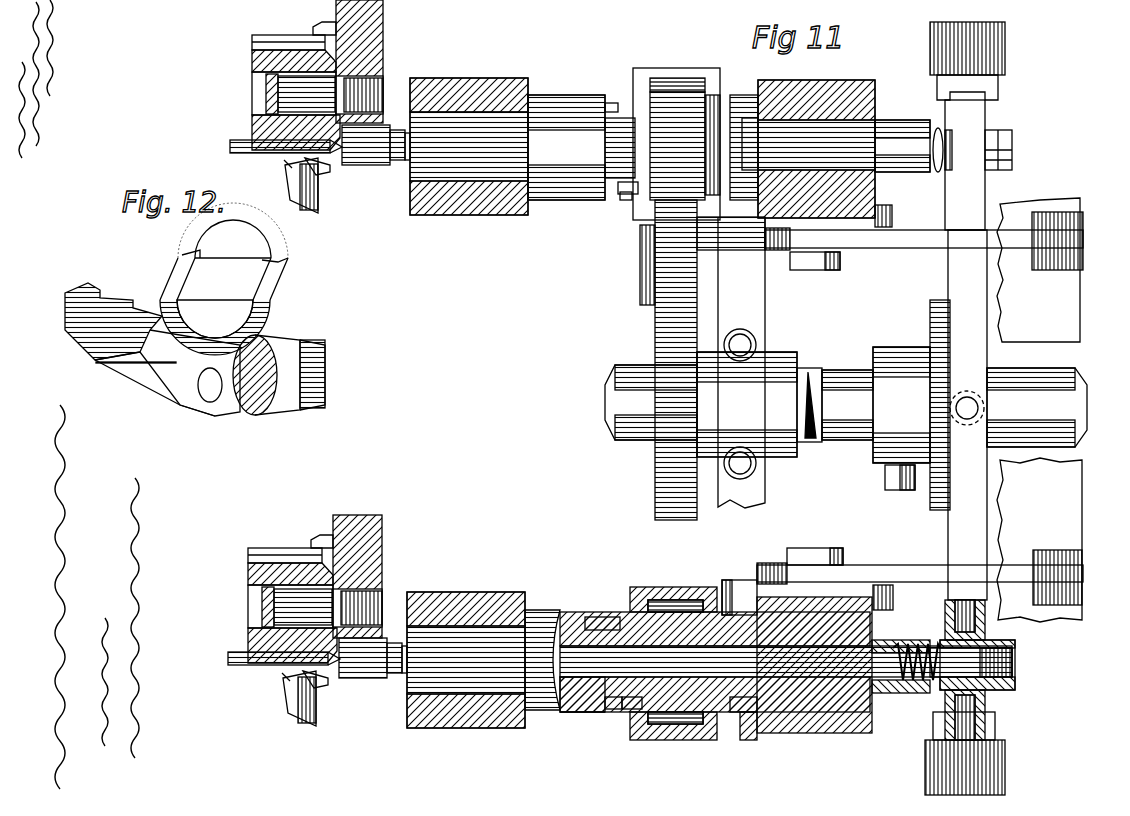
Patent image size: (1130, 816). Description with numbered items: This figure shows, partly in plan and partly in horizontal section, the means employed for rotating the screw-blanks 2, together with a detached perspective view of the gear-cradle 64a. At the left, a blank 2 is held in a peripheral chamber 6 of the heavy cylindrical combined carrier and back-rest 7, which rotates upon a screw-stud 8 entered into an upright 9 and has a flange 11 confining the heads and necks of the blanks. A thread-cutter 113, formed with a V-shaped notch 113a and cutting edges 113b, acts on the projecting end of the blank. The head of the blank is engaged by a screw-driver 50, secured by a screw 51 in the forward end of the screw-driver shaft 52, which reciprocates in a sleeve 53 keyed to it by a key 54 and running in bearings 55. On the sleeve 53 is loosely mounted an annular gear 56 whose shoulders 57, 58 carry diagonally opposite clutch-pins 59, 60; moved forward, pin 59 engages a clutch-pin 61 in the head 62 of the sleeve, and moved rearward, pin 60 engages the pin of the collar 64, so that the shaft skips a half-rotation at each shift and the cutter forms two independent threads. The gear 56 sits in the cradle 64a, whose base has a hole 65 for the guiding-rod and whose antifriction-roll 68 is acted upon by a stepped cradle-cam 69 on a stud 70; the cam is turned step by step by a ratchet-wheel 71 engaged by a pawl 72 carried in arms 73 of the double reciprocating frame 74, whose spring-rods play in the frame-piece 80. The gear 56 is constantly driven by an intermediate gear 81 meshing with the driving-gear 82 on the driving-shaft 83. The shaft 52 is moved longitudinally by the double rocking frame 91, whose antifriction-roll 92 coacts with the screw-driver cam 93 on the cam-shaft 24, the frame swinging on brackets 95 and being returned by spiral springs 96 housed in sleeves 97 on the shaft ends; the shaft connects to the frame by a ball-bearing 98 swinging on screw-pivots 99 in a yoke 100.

In FIG. 11, the screw-blank 2 is at (285, 413).
In FIG. 11, the peripheral chamber 6 is at (275, 42).
In FIG. 11, the combined carrier and back-rest 7 is at (252, 61).
In FIG. 11, the screw-stud 8 is at (292, 350).
In FIG. 11, the upright 9 is at (372, 38).
In FIG. 11, the flange 11 is at (320, 278).
In FIG. 11, the cam-shaft 24 is at (1034, 385).
In FIG. 11, the screw-driver 50 is at (362, 163).
In FIG. 11, the screw 51 is at (388, 160).
In FIG. 11, the screw-driver shaft 52 is at (397, 167).
In FIG. 11, the sleeve 53 is at (604, 712).
In FIG. 11, the key 54 is at (868, 638).
In FIG. 11, the bearing 55 is at (825, 738).
In FIG. 11, the annular gear 56 is at (690, 90).
In FIG. 11, the annular shoulder 57 is at (730, 96).
In FIG. 11, the annular shoulder 58 is at (620, 198).
In FIG. 11, the clutch-pin 59 is at (624, 192).
In FIG. 11, the clutch-pin 60 is at (760, 98).
In FIG. 11, the clutch-pin 61 is at (610, 102).
In FIG. 11, the head 62 is at (556, 104).
In FIG. 11, the collar 64 is at (752, 150).
In FIG. 11, the cradle 64a is at (688, 80).
In FIG. 12, the cradle 64a is at (268, 292).
In FIG. 12, the hole 65 is at (207, 402).
In FIG. 11, the antifriction-roll 68 is at (730, 582).
In FIG. 12, the antifriction-roll 68 is at (325, 373).
In FIG. 11, the stepped cradle-cam 69 is at (892, 214).
In FIG. 11, the stud 70 is at (840, 263).
In FIG. 11, the ratchet-wheel 71 is at (870, 250).
In FIG. 11, the pawl 72 is at (930, 240).
In FIG. 11, the arm 73 is at (1083, 222).
In FIG. 11, the double reciprocating frame 74 is at (1039, 410).
In FIG. 11, the frame-piece 80 is at (747, 362).
In FIG. 11, the intermediate gear 81 is at (640, 270).
In FIG. 11, the driving-gear 82 is at (654, 332).
In FIG. 11, the driving-shaft 83 is at (812, 385).
In FIG. 11, the double rocking frame 91 is at (967, 415).
In FIG. 11, the antifriction-roll 92 is at (967, 425).
In FIG. 11, the screw-driver cam 93 is at (930, 512).
In FIG. 11, the bracket 95 is at (1005, 68).
In FIG. 11, the spiral spring 96 is at (938, 165).
In FIG. 11, the sleeve 97 is at (897, 127).
In FIG. 11, the ball-bearing 98 is at (968, 130).
In FIG. 11, the screw-pivot 99 is at (986, 630).
In FIG. 11, the yoke 100 is at (996, 730).
In FIG. 11, the thread-cutter 113 is at (285, 178).
In FIG. 11, the V-shaped notch 113a is at (284, 161).
In FIG. 11, the cutting edge 113b is at (298, 436).